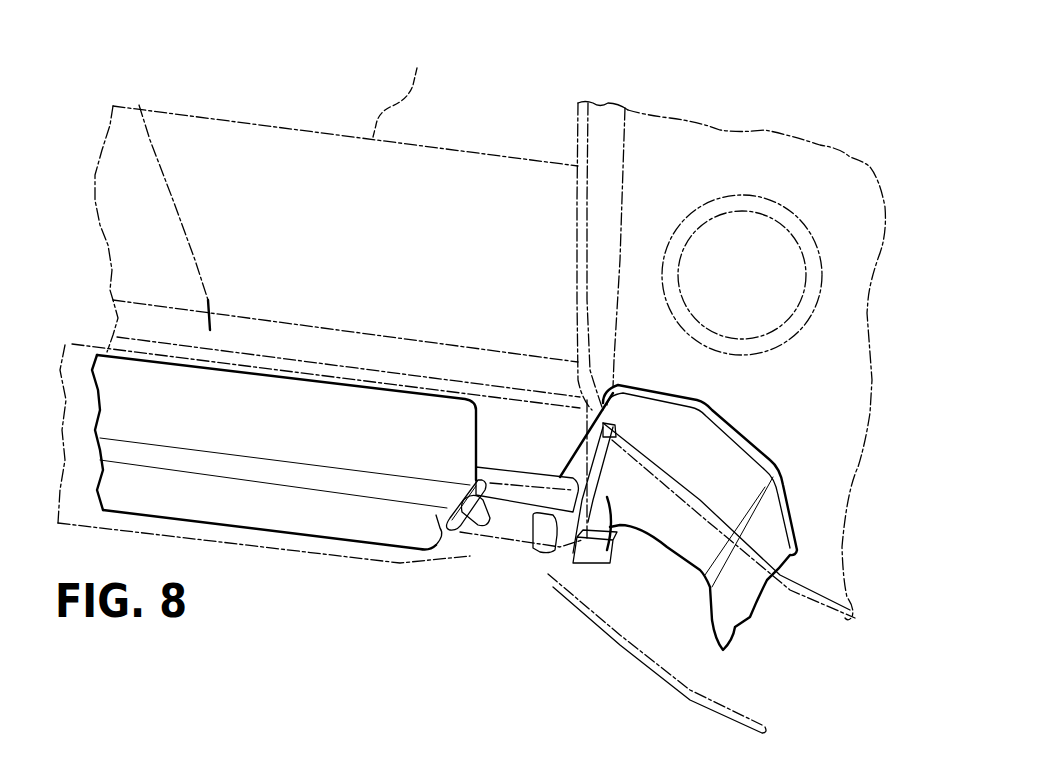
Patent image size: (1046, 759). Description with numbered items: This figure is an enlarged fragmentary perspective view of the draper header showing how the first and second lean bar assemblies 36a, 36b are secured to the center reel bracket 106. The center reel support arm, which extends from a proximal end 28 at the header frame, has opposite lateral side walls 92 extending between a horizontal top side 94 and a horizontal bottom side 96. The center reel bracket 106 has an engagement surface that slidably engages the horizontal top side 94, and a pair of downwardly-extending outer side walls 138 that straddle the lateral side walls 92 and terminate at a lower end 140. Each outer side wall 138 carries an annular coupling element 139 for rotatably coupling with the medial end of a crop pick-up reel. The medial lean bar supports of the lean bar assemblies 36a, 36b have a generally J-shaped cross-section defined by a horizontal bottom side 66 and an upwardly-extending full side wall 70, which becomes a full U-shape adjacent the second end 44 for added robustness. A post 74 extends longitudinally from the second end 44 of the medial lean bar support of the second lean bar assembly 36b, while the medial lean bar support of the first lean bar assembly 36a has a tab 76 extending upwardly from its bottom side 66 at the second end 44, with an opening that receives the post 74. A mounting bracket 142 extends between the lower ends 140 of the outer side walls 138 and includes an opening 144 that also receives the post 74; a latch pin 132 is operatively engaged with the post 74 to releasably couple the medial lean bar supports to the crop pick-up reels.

The proximal end 28 is at (258, 108).
The horizontal top side 94 is at (399, 93).
The lateral side walls 92 is at (393, 249).
The horizontal bottom side 96 is at (150, 320).
The lower end 140 is at (139, 105).
The center reel bracket 106 is at (602, 72).
The outer side walls 138 is at (682, 172).
The annular coupling element 139 is at (752, 228).
The full side wall 70 is at (368, 441).
The horizontal bottom side 66 is at (252, 517).
The first lean bar assembly 36a is at (383, 555).
The second lean bar assembly 36b is at (318, 522).
The second end 44 is at (440, 545).
The tab 76 is at (460, 548).
The post 74 is at (513, 497).
The opening 144 is at (563, 560).
The latch pin 132 is at (597, 563).
The mounting bracket 142 is at (683, 543).